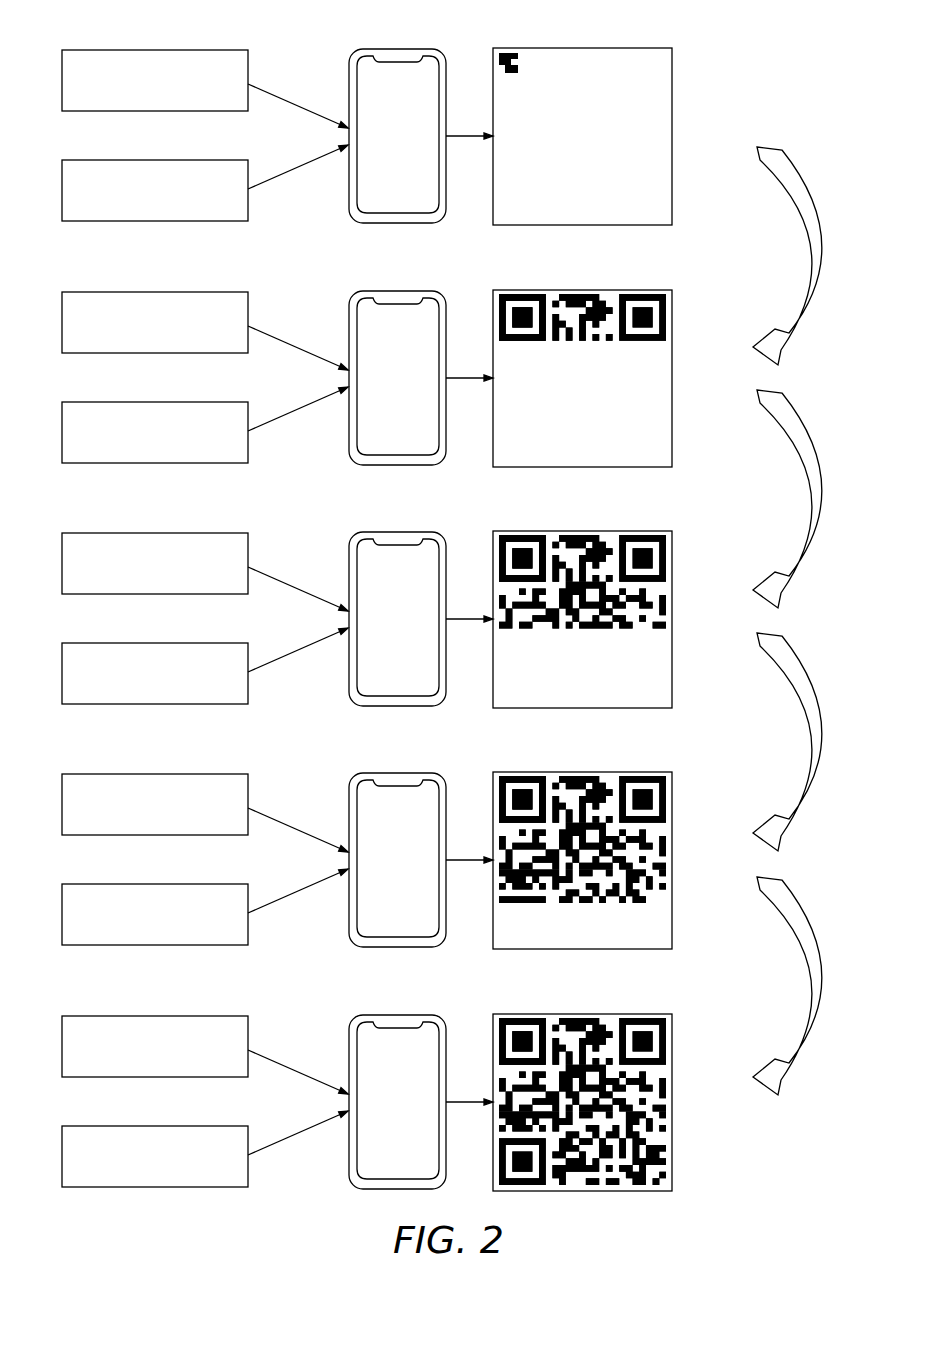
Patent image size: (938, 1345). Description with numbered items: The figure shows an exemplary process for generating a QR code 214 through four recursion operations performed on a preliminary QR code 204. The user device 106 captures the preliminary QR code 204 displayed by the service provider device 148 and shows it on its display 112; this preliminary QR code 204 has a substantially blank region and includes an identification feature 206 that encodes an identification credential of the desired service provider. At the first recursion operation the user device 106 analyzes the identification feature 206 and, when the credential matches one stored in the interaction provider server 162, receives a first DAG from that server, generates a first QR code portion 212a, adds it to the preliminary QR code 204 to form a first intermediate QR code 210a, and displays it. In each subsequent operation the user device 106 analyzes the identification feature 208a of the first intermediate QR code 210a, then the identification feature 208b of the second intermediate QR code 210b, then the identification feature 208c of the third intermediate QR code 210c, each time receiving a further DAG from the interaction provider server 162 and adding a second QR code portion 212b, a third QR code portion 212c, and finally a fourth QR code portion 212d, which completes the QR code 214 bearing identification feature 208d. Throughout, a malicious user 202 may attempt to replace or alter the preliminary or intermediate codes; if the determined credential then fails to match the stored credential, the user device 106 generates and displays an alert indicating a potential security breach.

The user device 106 is at (410, 49).
The display 112 is at (382, 107).
The service provider device 148 is at (203, 103).
The interaction provider server 162 is at (202, 345).
The malicious user 202 is at (140, 213).
The preliminary QR code 204 is at (607, 48).
The identification feature 206 is at (501, 48).
The identification feature 208a is at (502, 291).
The identification feature 208b is at (502, 532).
The identification feature 208c is at (502, 773).
The position marker of complete code 208d is at (502, 1015).
The first intermediate QR code 210a is at (568, 291).
The second intermediate QR code 210b is at (568, 532).
The third intermediate QR code 210c is at (568, 773).
The first QR code portion 212a is at (676, 290).
The second QR code portion 212b is at (676, 581).
The third QR code portion 212c is at (676, 872).
The fourth QR code portion 212d is at (676, 1144).
The QR code 214 is at (568, 1015).